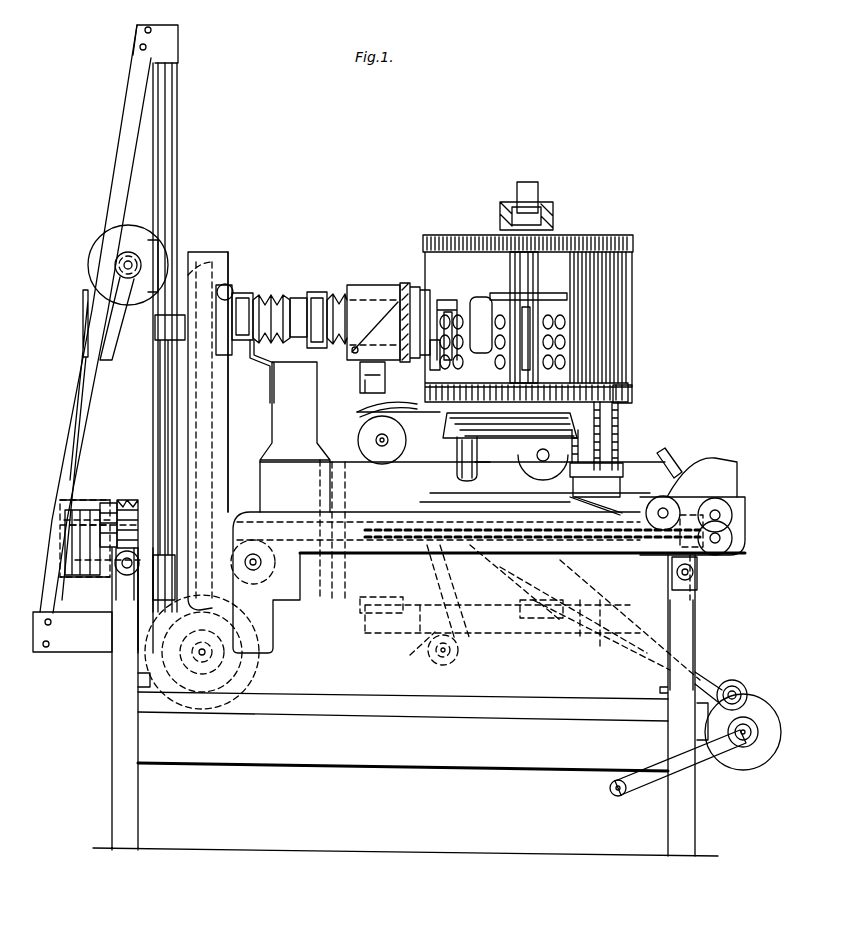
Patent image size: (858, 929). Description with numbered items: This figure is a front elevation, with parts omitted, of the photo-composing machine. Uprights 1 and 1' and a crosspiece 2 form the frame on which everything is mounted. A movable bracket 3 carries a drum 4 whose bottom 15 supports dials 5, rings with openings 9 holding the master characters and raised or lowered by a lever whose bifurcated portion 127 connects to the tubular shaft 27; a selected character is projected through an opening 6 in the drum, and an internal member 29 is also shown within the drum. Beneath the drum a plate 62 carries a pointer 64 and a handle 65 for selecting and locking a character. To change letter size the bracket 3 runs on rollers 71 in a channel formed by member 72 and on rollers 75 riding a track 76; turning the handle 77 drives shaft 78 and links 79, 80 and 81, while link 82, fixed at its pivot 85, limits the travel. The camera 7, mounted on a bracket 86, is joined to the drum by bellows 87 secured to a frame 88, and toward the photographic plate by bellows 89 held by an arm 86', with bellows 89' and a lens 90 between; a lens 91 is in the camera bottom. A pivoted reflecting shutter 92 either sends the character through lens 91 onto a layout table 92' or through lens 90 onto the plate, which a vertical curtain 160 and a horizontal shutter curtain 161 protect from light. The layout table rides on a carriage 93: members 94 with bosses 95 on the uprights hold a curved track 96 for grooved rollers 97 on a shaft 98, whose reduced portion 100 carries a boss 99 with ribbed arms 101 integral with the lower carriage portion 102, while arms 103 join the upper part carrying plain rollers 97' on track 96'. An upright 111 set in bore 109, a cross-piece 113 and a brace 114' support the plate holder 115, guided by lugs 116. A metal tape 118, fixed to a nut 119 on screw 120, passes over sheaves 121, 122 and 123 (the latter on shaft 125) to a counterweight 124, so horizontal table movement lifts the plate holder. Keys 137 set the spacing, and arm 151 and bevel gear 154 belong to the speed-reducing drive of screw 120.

The upright 1 is at (403, 702).
The upright 1' is at (688, 705).
The crosspiece 2 is at (432, 768).
The bracket 3 is at (378, 411).
The drum 4 is at (625, 355).
The dials 5 is at (502, 333).
The opening 6 is at (441, 300).
The camera 7 is at (369, 292).
The openings 9 is at (450, 312).
The bottom 15 is at (633, 397).
The tubular shaft 27 is at (510, 270).
The rod 29 is at (531, 308).
The plate 62 is at (478, 446).
The indicator or pointer 64 is at (452, 426).
The handle 65 is at (478, 470).
The rollers 71 is at (366, 614).
The member 72 is at (578, 638).
The rollers 75 is at (400, 440).
The track 76 is at (432, 462).
The handle 77 is at (648, 784).
The shaft 78 is at (750, 746).
The link 79 is at (758, 704).
The link 80 is at (706, 677).
The link 81 is at (498, 506).
The link 82 is at (414, 653).
The pivot 85 is at (455, 660).
The bracket 86 is at (295, 437).
The arm 86' is at (256, 371).
The bellows 87 is at (414, 283).
The frame 88 is at (427, 365).
The bellows 89 is at (269, 308).
The bellows 89' is at (342, 301).
The lens 90 is at (313, 291).
The lens 91 is at (360, 386).
The shutter 92 is at (375, 327).
The layout table 92' is at (535, 488).
The carriage 93 is at (478, 557).
The members 94 is at (126, 657).
The bosses 95 is at (140, 560).
The curved track 96 is at (85, 587).
The track 96' is at (713, 580).
The grooved or flanged rollers 97 is at (128, 510).
The plain rollers 97' is at (729, 535).
The shaft 98 is at (140, 532).
The boss 99 is at (110, 503).
The reduced portion 100 is at (70, 505).
The ribbed arms 101 is at (75, 556).
The lower portion of the carriage 102 is at (76, 640).
The arms 103 is at (273, 620).
The bore 109 is at (132, 700).
The upright 111 is at (170, 179).
The cross-piece 113 is at (178, 50).
The brace 114' is at (95, 319).
The plate holder 115 is at (222, 460).
The lugs 116 is at (158, 332).
The metal tape or cable 118 is at (83, 298).
The nut 119 is at (615, 556).
The screw 120 is at (392, 546).
The sheave 121 is at (253, 572).
The sheave 122 is at (256, 672).
The sheave 123 is at (102, 252).
The counterweight 124 is at (70, 530).
The shaft 125 is at (117, 318).
The bifurcated portion 127 is at (554, 212).
The keys 137 is at (618, 390).
The arm 151 is at (680, 466).
The bevel gear 154 is at (733, 514).
The vertical curtain 160 is at (212, 262).
The horizontal shutter curtain 161 is at (228, 290).